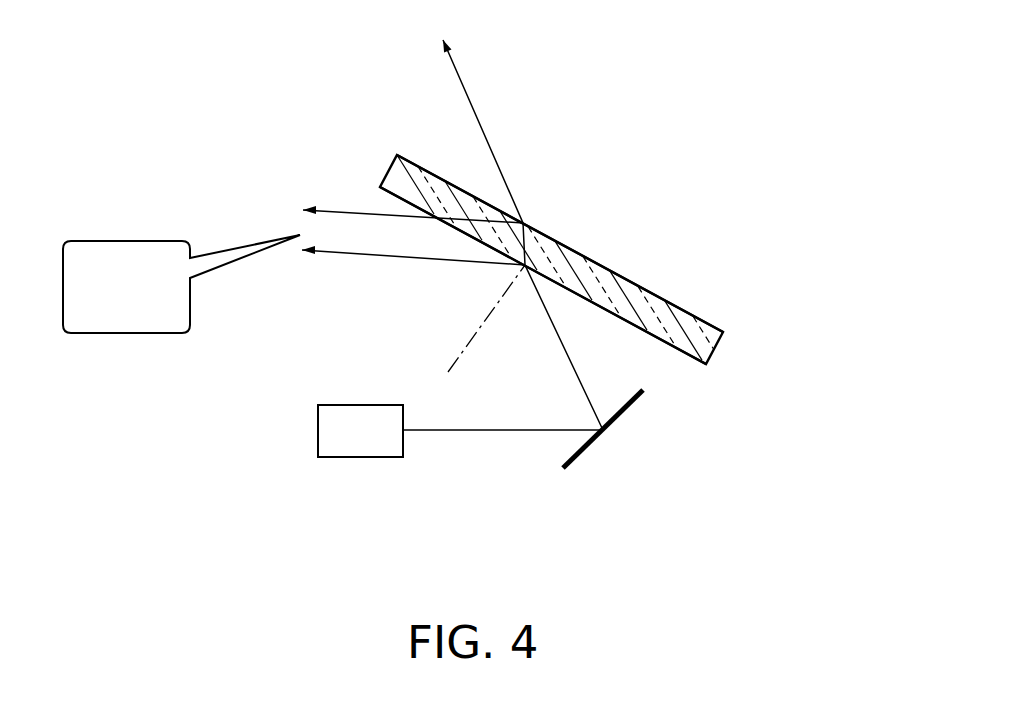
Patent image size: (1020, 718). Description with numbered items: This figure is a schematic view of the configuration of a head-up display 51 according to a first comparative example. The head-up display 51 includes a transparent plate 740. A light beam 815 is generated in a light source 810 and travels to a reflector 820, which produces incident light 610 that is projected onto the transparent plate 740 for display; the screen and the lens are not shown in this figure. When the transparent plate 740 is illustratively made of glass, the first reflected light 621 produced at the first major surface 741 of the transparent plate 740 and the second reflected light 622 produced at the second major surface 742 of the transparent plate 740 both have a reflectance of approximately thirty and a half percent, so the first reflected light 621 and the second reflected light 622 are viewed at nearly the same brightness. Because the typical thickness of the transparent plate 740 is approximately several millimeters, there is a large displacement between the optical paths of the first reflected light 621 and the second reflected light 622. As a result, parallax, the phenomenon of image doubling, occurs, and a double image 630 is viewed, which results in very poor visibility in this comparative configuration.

The head-up display 51 is at (750, 122).
The double image 630 is at (123, 240).
The second reflected light 622 is at (330, 208).
The first reflected light 621 is at (373, 258).
The transparent plate 740 is at (703, 318).
The second major surface 742 is at (607, 268).
The first major surface 741 is at (693, 357).
The incident light 610 is at (577, 367).
The light source 810 is at (358, 458).
The light beam 815 is at (467, 431).
The reflector 820 is at (587, 450).